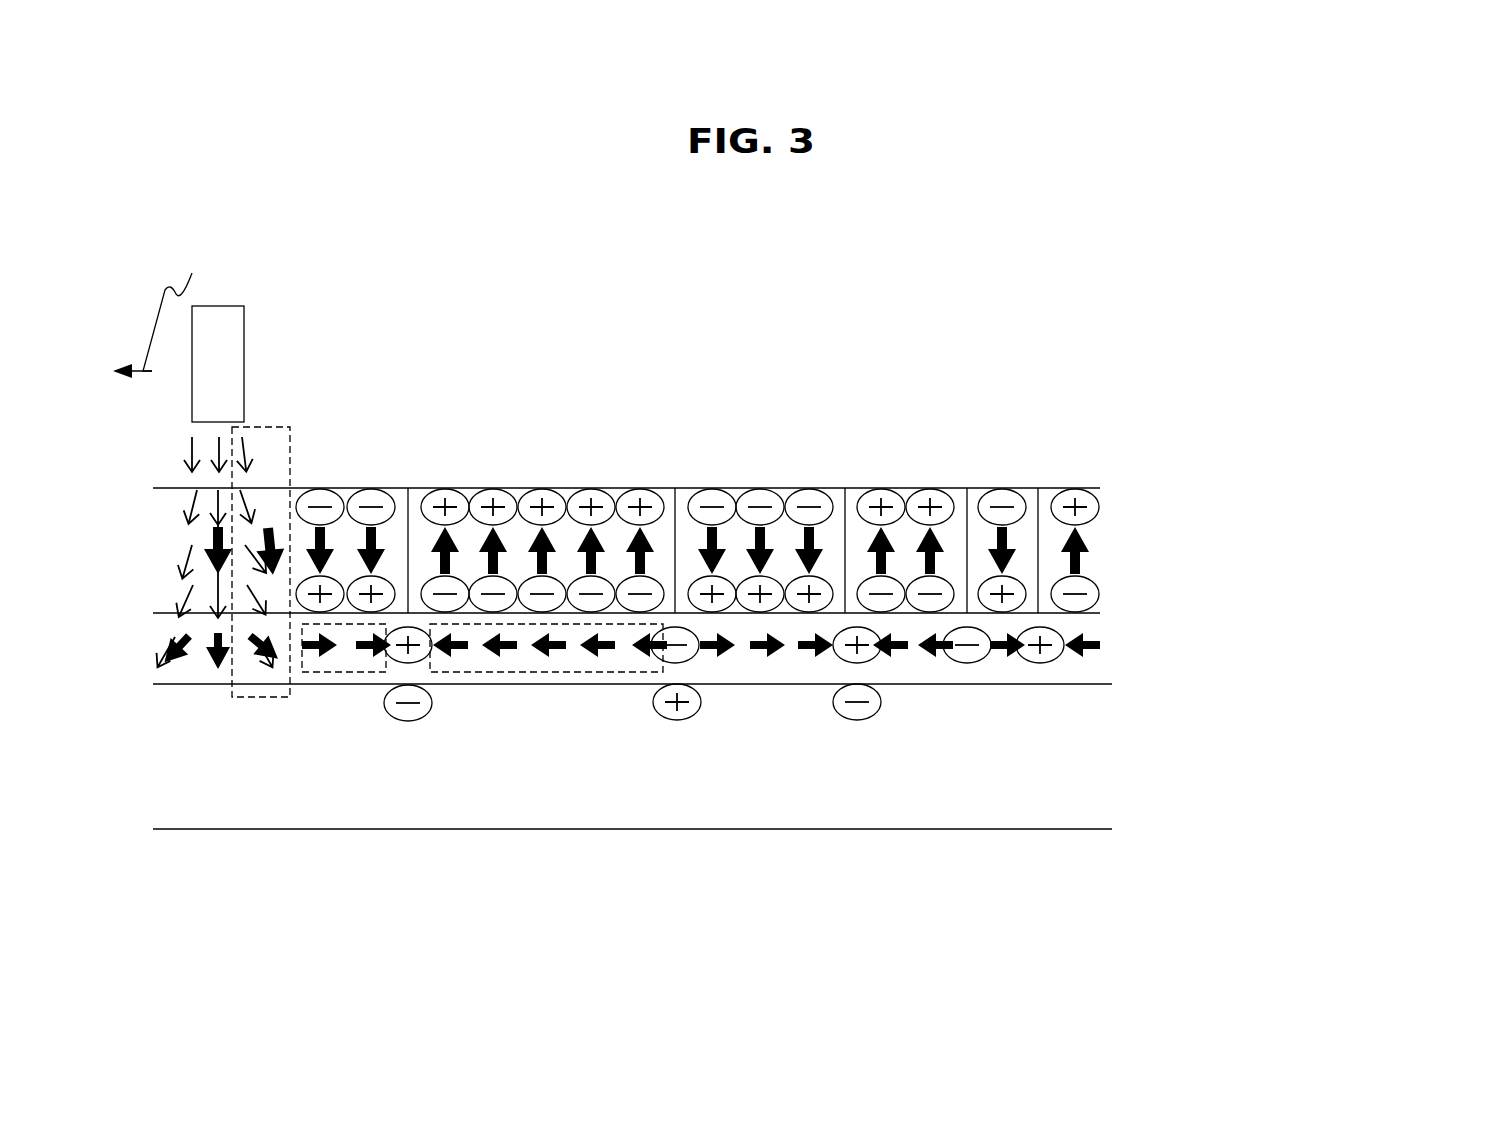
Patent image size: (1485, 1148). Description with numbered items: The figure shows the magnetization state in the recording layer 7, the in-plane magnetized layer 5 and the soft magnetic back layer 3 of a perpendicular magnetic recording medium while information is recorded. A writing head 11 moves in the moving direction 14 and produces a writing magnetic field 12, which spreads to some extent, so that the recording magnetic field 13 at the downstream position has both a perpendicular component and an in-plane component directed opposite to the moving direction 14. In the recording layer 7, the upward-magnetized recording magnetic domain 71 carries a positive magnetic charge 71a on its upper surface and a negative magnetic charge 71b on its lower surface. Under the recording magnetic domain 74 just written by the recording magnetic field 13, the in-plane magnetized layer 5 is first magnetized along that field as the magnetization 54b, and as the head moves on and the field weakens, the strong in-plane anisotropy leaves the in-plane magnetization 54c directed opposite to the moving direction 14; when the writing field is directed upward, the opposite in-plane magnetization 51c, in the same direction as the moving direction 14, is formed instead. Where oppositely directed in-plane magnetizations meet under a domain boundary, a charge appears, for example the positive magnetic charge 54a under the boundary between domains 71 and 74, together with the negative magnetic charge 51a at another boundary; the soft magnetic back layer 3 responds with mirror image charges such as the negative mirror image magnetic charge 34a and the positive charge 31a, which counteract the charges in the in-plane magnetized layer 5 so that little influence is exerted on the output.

The moving direction 14 is at (283, 306).
The writing head 11 is at (225, 360).
The writing magnetic field 12 is at (218, 455).
The recording layer 7 is at (790, 550).
The in-plane magnetized layer 5 is at (803, 642).
The soft magnetic back layer 3 is at (804, 756).
The recording magnetic domain 74 is at (348, 487).
The recording magnetic domain 71 is at (551, 500).
The positive magnetic charge 71a is at (533, 498).
The negative magnetic charge 71b is at (552, 585).
The recording magnetic field 13 is at (247, 697).
The magnetization 54b is at (260, 647).
The magnetization 54c is at (323, 673).
The positive magnetic charge 54a is at (403, 642).
The negative mirror image magnetic charge 34a is at (422, 713).
The magnetization 51c is at (525, 670).
The negative magnetic charge 51a is at (687, 653).
The positive magnetic charge 31a is at (682, 713).